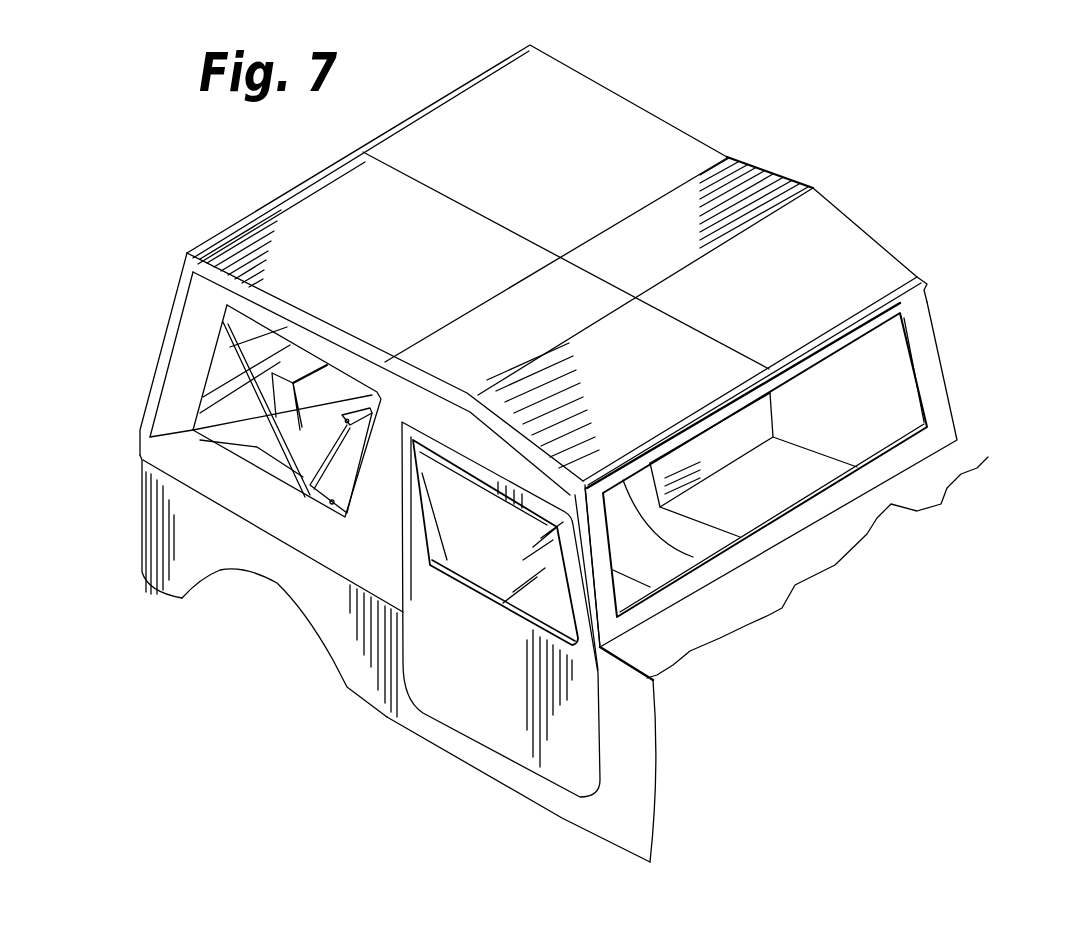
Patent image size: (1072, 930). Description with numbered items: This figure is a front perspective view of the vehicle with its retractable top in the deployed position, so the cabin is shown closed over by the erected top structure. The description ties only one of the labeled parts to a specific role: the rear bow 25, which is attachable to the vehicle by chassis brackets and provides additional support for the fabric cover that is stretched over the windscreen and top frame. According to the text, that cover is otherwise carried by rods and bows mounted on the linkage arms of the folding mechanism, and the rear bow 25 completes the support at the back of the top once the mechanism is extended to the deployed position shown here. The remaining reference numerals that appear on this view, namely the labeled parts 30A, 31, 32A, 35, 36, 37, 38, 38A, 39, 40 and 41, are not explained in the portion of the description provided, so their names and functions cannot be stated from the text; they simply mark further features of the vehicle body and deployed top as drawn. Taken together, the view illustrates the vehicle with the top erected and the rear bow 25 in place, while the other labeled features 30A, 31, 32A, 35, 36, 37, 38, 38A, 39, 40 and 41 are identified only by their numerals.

The rear bow 25 is at (233, 362).
The door 30A is at (505, 722).
The front roof panel 31 is at (318, 226).
The cowl side panel 32A is at (272, 470).
The rear roof panel 35 is at (733, 237).
The roof panel 36 is at (657, 197).
The roof side rail 37 is at (410, 119).
The rear quarter window 38 is at (793, 463).
The door window 38A is at (482, 548).
The bracket 39 is at (193, 430).
The rear body 40 is at (913, 450).
The front body side panel 41 is at (148, 548).